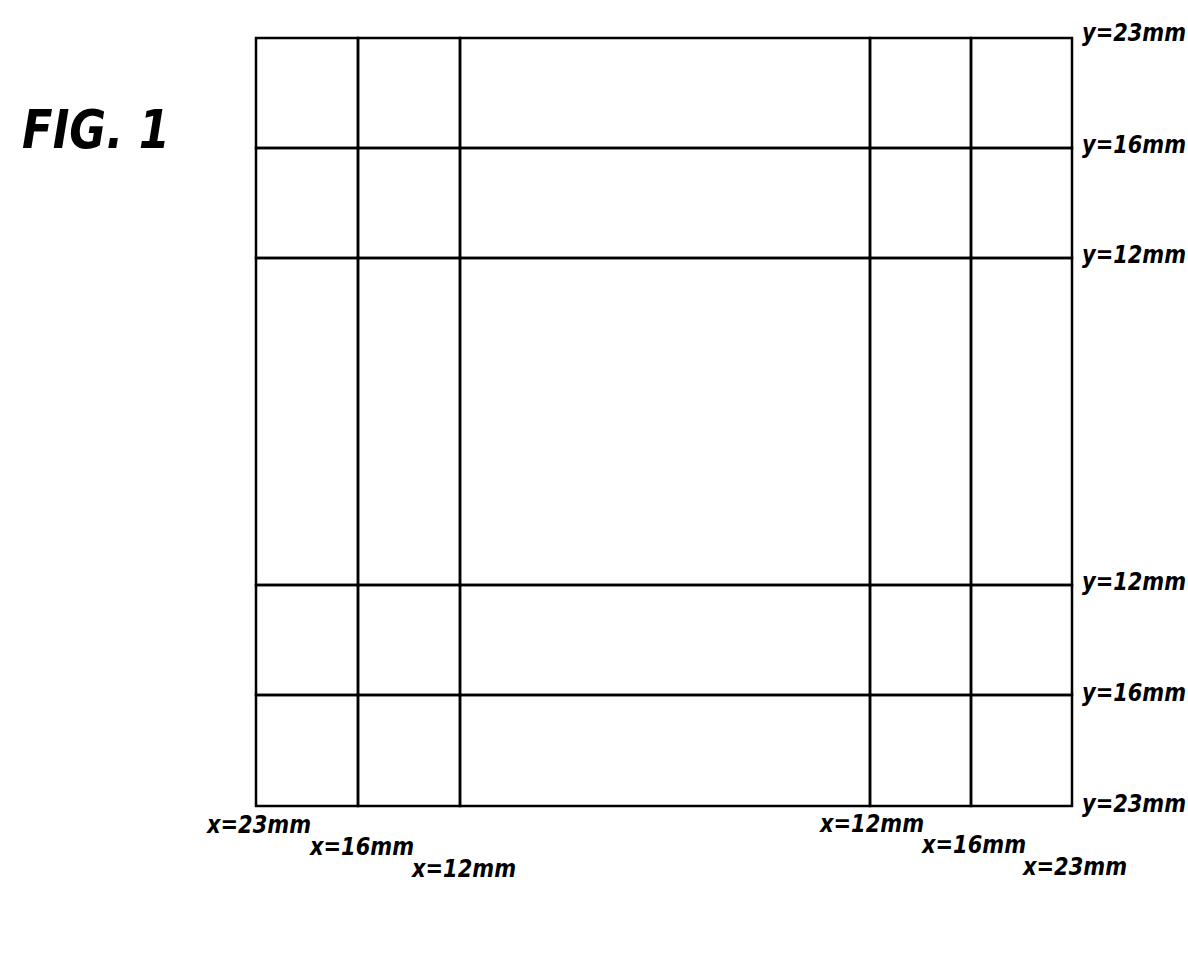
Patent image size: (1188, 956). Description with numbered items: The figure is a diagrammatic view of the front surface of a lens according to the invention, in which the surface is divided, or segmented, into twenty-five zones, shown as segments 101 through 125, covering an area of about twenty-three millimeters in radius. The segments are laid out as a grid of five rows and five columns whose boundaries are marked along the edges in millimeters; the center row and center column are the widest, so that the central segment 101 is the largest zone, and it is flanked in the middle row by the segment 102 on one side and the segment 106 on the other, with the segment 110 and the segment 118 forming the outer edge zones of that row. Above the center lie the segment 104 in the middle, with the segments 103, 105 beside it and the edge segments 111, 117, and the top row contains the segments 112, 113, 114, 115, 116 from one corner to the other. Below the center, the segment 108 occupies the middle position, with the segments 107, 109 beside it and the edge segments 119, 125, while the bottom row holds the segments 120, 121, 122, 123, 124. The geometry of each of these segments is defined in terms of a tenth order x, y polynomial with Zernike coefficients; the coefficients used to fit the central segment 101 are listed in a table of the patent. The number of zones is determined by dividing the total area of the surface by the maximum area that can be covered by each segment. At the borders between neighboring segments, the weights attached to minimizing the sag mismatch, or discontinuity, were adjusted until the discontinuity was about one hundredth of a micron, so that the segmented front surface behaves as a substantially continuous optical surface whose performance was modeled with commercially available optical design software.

The segment 101 is at (642, 438).
The segment 102 is at (944, 438).
The segment 103 is at (944, 219).
The segment 104 is at (642, 219).
The segment 105 is at (386, 219).
The segment 106 is at (386, 438).
The segment 107 is at (386, 656).
The segment 108 is at (642, 656).
The segment 109 is at (944, 656).
The segment 110 is at (998, 438).
The segment 111 is at (998, 219).
The segment 112 is at (998, 109).
The segment 113 is at (944, 109).
The segment 114 is at (642, 109).
The segment 115 is at (386, 109).
The segment 116 is at (284, 109).
The segment 117 is at (284, 219).
The segment 118 is at (284, 438).
The segment 119 is at (284, 656).
The segment 120 is at (284, 766).
The segment 121 is at (386, 766).
The segment 122 is at (642, 766).
The segment 123 is at (944, 766).
The segment 124 is at (998, 766).
The segment 125 is at (998, 656).